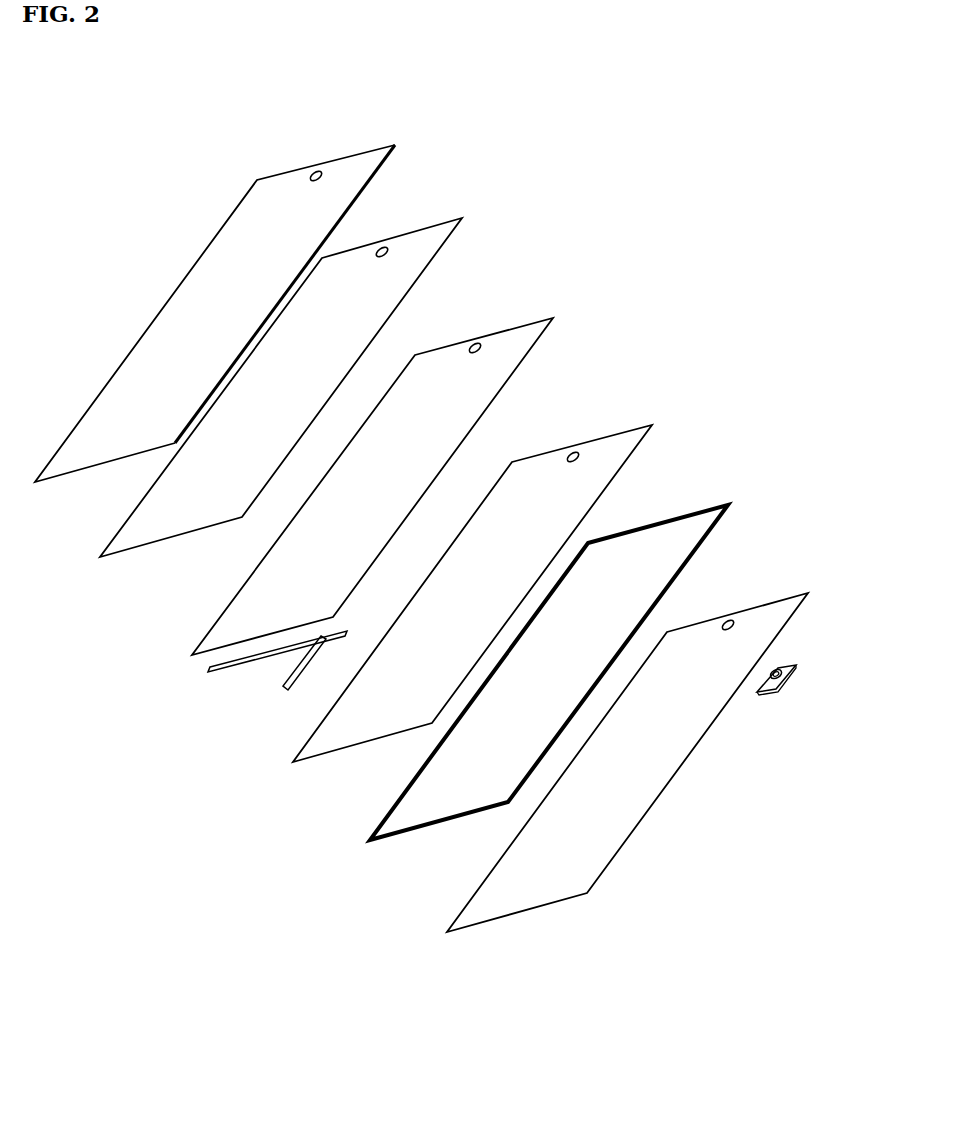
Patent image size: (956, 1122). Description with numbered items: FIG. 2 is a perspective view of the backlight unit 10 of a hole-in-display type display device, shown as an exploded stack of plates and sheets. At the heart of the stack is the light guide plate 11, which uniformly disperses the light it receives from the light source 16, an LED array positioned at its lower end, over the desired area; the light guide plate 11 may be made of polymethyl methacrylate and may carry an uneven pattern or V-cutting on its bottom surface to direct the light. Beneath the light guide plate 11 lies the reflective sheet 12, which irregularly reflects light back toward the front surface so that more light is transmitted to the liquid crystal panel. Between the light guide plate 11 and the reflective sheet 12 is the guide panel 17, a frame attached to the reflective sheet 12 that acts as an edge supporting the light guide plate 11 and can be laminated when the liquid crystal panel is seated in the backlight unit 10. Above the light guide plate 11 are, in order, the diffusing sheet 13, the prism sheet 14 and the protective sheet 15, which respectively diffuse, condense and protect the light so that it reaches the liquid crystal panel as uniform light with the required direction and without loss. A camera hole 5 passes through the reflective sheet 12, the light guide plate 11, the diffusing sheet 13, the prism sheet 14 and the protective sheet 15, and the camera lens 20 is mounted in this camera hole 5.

The backlight unit 10 is at (219, 124).
The camera hole 5 is at (318, 171).
The light guide plate 11 is at (613, 442).
The reflective sheet 12 is at (773, 613).
The diffusing sheet 13 is at (520, 338).
The prism sheet 14 is at (428, 238).
The protective sheet 15 is at (371, 155).
The light source 16 is at (215, 675).
The guide panel 17 is at (707, 508).
The camera lens 20 is at (802, 668).